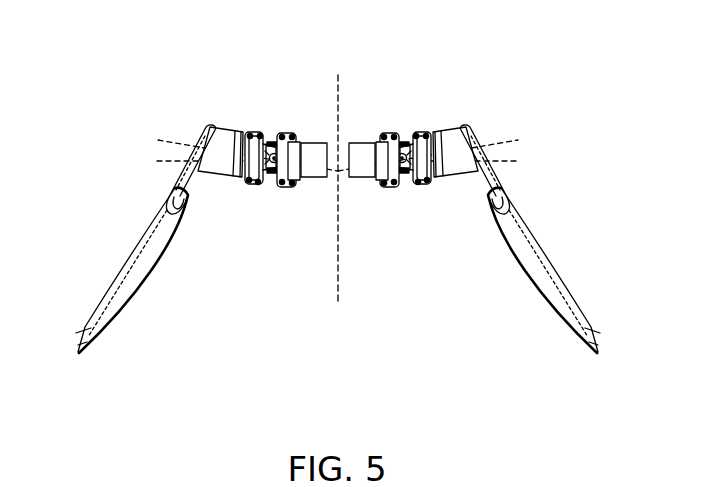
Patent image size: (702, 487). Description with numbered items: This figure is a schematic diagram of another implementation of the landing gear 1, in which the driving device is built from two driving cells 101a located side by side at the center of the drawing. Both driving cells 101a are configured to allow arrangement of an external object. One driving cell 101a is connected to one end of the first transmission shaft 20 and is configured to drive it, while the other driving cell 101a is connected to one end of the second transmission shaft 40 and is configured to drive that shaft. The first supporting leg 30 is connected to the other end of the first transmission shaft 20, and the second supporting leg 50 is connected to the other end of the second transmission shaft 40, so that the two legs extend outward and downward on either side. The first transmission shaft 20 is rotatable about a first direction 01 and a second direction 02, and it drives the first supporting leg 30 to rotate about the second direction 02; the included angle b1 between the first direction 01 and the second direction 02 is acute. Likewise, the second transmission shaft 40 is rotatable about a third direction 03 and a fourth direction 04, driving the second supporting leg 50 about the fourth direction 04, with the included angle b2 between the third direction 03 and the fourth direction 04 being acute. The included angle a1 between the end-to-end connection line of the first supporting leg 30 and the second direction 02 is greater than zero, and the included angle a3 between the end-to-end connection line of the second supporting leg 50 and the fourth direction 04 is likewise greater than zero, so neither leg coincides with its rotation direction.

The landing gear 1 is at (254, 32).
The first transmission shaft 20 is at (250, 185).
The second transmission shaft 40 is at (430, 185).
The first supporting leg 30 is at (102, 295).
The second supporting leg 50 is at (568, 288).
The included angle a1 is at (196, 155).
The included angle a3 is at (483, 153).
The included angle b1 is at (233, 153).
The included angle b2 is at (443, 153).
The first direction 01 is at (188, 167).
The second direction 02 is at (235, 146).
The third direction 03 is at (486, 167).
The fourth direction 04 is at (438, 146).
The driving cell 101a is at (351, 177).